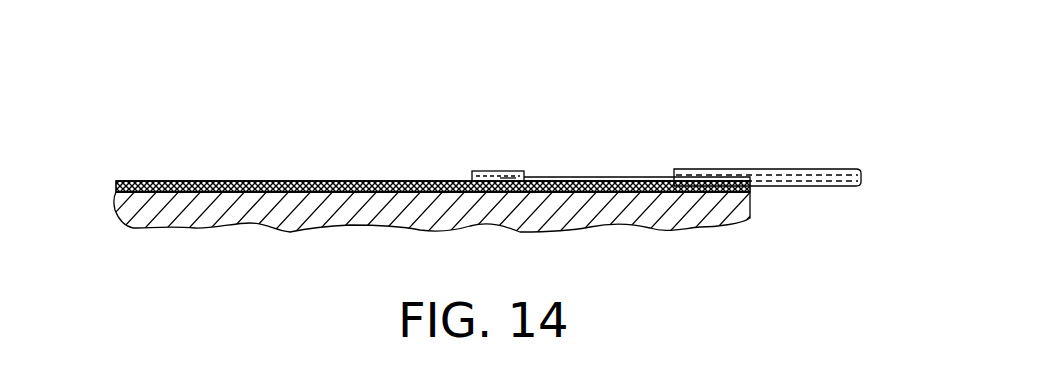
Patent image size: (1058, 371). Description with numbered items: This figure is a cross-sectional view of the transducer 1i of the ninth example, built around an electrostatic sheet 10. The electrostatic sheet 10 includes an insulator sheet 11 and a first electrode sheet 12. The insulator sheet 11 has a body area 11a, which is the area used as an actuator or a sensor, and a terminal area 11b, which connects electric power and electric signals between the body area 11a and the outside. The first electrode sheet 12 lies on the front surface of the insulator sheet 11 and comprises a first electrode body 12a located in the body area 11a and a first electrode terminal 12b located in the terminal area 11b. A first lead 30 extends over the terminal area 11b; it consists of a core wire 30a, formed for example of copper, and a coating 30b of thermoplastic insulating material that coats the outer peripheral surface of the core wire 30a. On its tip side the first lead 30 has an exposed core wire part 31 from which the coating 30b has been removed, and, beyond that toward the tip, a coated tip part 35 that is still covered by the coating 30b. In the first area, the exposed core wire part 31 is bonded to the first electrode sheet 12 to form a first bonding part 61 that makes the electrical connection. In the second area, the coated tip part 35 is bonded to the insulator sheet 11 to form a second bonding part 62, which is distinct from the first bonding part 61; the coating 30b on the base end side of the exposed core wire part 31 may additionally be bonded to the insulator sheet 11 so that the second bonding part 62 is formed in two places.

The transducer 1i is at (502, 132).
The electrostatic sheet 10 is at (415, 154).
The insulator sheet 11 is at (255, 210).
The body area 11a is at (298, 213).
The terminal area 11b is at (497, 213).
The first electrode sheet 12 is at (149, 181).
The first electrode body 12a is at (190, 181).
The first electrode terminal 12b is at (552, 183).
The first lead 30 is at (767, 105).
The core wire 30a is at (768, 170).
The coating 30b is at (846, 176).
The exposed core wire part 31 is at (623, 177).
The coated tip part 35 is at (493, 171).
The first bonding part 61 is at (661, 181).
The second bonding part 62 is at (508, 178).